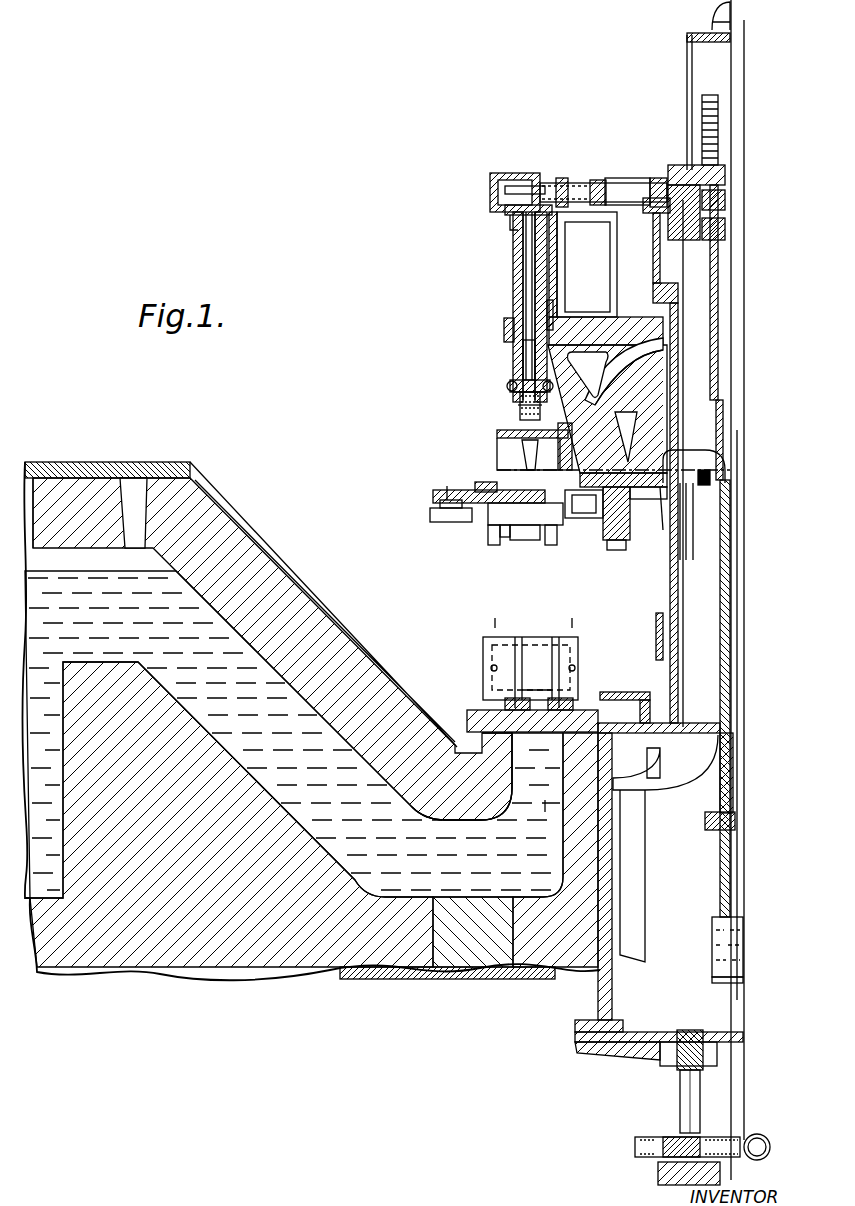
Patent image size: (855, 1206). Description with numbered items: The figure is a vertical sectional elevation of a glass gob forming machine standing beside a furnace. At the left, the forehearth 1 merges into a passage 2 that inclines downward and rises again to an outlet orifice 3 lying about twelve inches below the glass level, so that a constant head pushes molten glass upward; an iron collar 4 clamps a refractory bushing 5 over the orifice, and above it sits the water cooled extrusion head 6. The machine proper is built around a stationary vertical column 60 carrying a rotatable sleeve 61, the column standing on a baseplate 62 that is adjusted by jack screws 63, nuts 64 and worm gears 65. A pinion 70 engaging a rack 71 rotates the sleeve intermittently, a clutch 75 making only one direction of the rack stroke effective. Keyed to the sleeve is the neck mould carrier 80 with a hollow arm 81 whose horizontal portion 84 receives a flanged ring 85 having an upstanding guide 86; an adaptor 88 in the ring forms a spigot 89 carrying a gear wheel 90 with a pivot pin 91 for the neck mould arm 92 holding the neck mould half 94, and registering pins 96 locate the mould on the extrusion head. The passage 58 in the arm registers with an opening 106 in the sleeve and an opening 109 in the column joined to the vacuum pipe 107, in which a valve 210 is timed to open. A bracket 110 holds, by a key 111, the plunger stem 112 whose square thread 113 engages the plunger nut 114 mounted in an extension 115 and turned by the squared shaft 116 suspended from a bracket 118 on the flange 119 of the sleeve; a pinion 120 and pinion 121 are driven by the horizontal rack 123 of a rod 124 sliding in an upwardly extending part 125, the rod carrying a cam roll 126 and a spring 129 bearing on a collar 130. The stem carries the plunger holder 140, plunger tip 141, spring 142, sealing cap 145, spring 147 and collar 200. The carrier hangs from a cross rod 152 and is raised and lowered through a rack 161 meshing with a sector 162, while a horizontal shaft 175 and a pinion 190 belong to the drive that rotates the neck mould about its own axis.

The forehearth 1 is at (70, 583).
The passage 2 is at (282, 678).
The outlet orifice 3 is at (474, 744).
The iron collar 4 is at (470, 714).
The bushing 5 is at (577, 686).
The extrusion head 6 is at (488, 641).
The passage 58 is at (670, 360).
The vertical column 60 is at (678, 331).
The sleeve 61 is at (660, 667).
The baseplate 62 is at (640, 1043).
The jack screws 63 is at (687, 1089).
The nuts 64 is at (678, 1031).
The worm gears 65 is at (722, 1138).
The pinion 70 is at (704, 827).
The rack 71 is at (723, 869).
The clutch 75 is at (720, 849).
The neck mould carrier 80 is at (665, 400).
The hollow arm 81 is at (598, 408).
The horizontal portion 84 is at (478, 490).
The flanged ring 85 is at (498, 472).
The upstanding guide 86 is at (528, 470).
The adaptor 88 is at (538, 532).
The spigot 89 is at (470, 536).
The gear wheel 90 is at (438, 506).
The pivot pin 91 is at (576, 522).
The neck mould arm 92 is at (443, 516).
The neck mould half 94 is at (516, 542).
The registering pins 96 is at (498, 542).
The opening 106 is at (615, 520).
The vacuum pipe 107 is at (663, 525).
The opening 109 is at (660, 510).
The bracket 110 is at (507, 342).
The key 111 is at (519, 321).
The plunger stem 112 is at (528, 360).
The square thread 113 is at (520, 290).
The plunger nut 114 is at (512, 222).
The extension 115 is at (527, 300).
The squared shaft 116 is at (514, 255).
The bracket 118 is at (533, 232).
The flange 119 is at (590, 328).
The pinion 120 is at (490, 183).
The pinion 121 is at (505, 207).
The horizontal rack 123 is at (520, 188).
The rod 124 is at (560, 183).
The upwardly extending part 125 is at (600, 182).
The cam roll 126 is at (658, 180).
The spring 129 is at (605, 182).
The collar 130 is at (590, 186).
The plunger holder 140 is at (526, 398).
The plunger tip 141 is at (526, 455).
The spring 142 is at (524, 420).
The sealing cap 145 is at (518, 410).
The spring 147 is at (518, 388).
The cross rod 152 is at (713, 27).
The rack 161 is at (714, 787).
The sector 162 is at (718, 896).
The horizontal shaft 175 is at (690, 165).
The pinion 190 is at (704, 977).
The collar 200 is at (520, 438).
The valve 210 is at (700, 458).